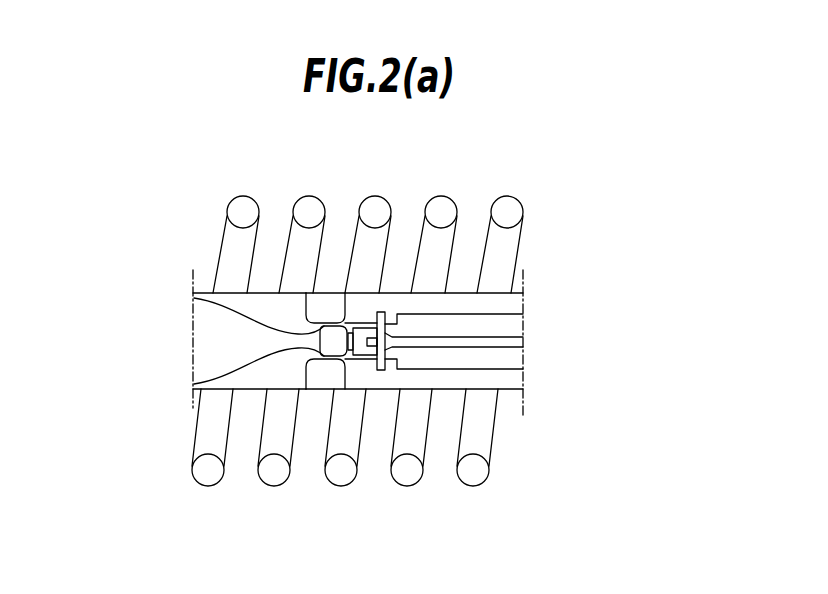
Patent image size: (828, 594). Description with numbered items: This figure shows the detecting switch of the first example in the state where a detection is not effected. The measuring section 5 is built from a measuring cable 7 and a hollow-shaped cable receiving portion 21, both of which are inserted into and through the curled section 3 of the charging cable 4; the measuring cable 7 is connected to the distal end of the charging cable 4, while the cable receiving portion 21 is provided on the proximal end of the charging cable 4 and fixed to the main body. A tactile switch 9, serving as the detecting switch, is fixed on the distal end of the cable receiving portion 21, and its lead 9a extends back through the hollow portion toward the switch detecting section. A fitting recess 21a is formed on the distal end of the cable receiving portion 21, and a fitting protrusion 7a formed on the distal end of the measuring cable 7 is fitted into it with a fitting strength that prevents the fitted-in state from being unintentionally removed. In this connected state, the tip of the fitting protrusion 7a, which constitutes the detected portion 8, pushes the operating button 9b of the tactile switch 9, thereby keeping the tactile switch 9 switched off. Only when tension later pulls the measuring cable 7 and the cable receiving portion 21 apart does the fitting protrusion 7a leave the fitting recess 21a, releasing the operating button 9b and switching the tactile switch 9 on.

The curled section 3 is at (372, 365).
The charging cable 4 is at (272, 475).
The measuring section 5 is at (331, 277).
The measuring cable 7 is at (202, 353).
The fitting protrusion 7a is at (206, 299).
The detected portion 8 is at (362, 315).
The tactile switch 9 is at (357, 356).
The lead 9a is at (498, 342).
The operating button 9b is at (345, 352).
The cable receiving portion 21 is at (490, 303).
The fitting recess 21a is at (333, 356).